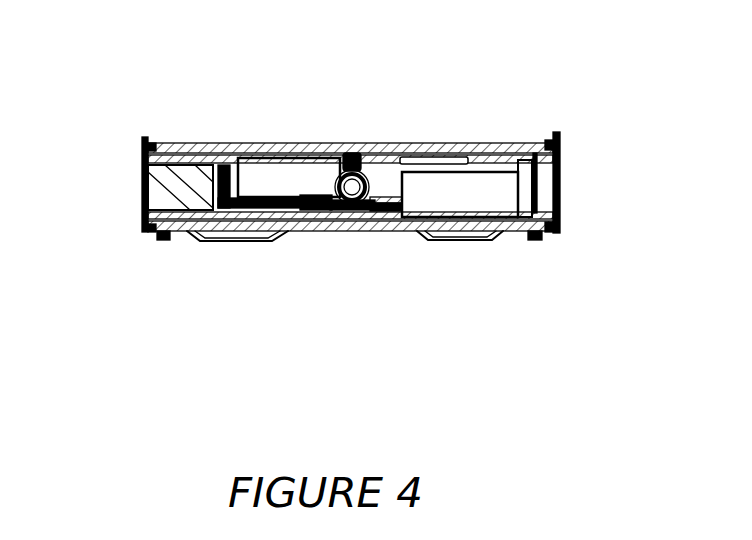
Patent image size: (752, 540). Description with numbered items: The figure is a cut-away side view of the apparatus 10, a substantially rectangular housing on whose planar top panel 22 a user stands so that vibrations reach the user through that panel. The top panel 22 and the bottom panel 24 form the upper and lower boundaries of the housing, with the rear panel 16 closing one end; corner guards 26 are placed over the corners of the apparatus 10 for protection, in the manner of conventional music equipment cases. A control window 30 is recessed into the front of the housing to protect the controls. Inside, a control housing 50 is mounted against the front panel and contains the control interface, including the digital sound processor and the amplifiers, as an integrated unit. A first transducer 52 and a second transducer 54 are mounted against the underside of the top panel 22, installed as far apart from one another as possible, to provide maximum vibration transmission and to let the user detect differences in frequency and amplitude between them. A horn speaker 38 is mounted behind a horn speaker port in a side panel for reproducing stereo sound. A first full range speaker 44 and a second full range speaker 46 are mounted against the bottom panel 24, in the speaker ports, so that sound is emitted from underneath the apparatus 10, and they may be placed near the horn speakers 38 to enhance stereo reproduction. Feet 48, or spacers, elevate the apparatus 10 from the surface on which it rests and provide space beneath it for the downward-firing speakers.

The apparatus 10 is at (612, 56).
The rear panel 16 is at (560, 183).
The top panel 22 is at (290, 142).
The bottom panel 24 is at (330, 232).
The corner guards 26 is at (143, 143).
The control window 30 is at (137, 197).
The horn speaker 38 is at (372, 176).
The first full range speaker 44 is at (225, 242).
The second full range speaker 46 is at (450, 242).
The feet 48 is at (162, 240).
The control housing 50 is at (178, 178).
The first transducer 52 is at (375, 187).
The second transducer 54 is at (440, 160).